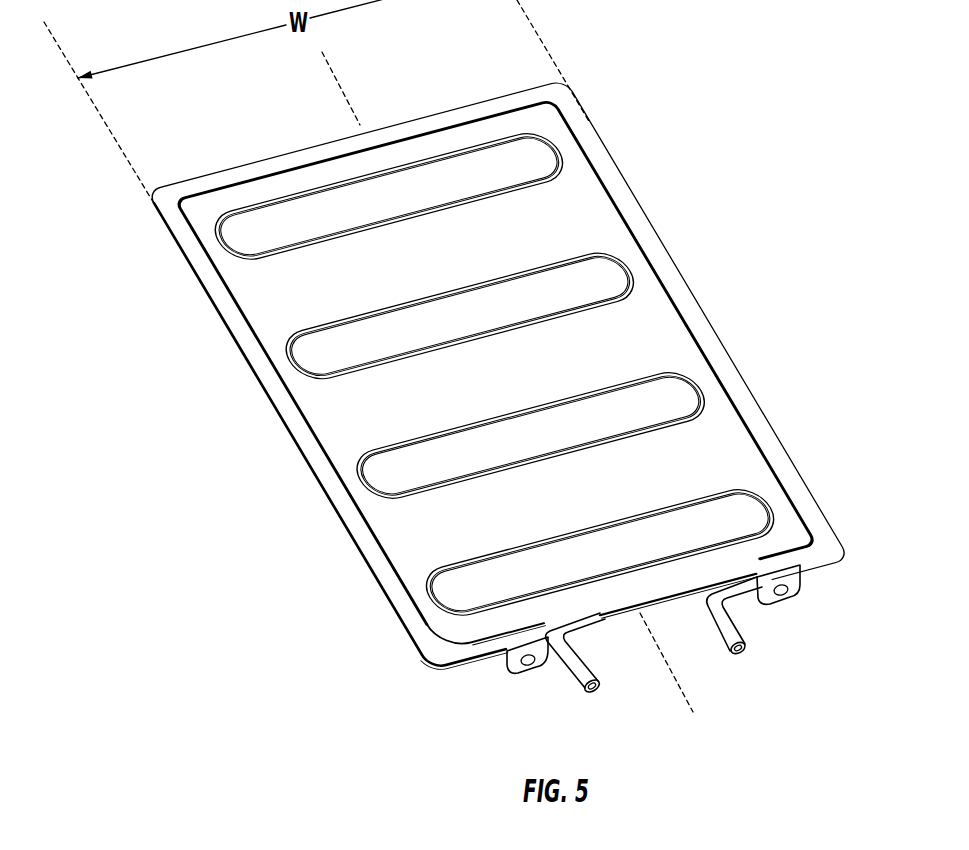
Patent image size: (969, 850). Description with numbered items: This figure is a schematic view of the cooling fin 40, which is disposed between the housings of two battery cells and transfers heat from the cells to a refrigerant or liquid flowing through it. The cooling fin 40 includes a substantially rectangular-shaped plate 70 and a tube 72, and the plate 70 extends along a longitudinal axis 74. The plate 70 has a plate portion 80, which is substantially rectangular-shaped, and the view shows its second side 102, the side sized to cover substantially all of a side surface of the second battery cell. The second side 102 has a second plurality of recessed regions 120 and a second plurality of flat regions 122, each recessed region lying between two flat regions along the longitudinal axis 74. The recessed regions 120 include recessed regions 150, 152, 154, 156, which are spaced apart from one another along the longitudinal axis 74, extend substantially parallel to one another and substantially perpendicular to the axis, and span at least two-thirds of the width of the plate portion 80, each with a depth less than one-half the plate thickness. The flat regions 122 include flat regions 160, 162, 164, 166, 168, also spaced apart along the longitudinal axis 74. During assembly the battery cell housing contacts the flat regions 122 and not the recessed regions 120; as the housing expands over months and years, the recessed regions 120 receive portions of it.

The cooling fin 40 is at (812, 160).
The substantially rectangular-shaped plate 70 is at (551, 117).
The tube 72 is at (727, 628).
The longitudinal axis 74 is at (333, 73).
The plate portion 80 is at (762, 480).
The second side 102 is at (437, 625).
The second plurality of recessed regions 120 is at (673, 573).
The second plurality of flat regions 122 is at (457, 590).
The recessed region 150 is at (424, 205).
The recessed region 152 is at (487, 330).
The recessed region 154 is at (554, 446).
The recessed region 156 is at (619, 566).
The flat region 160 is at (404, 175).
The flat region 162 is at (455, 276).
The flat region 164 is at (520, 391).
The flat region 166 is at (575, 516).
The flat region 168 is at (635, 608).